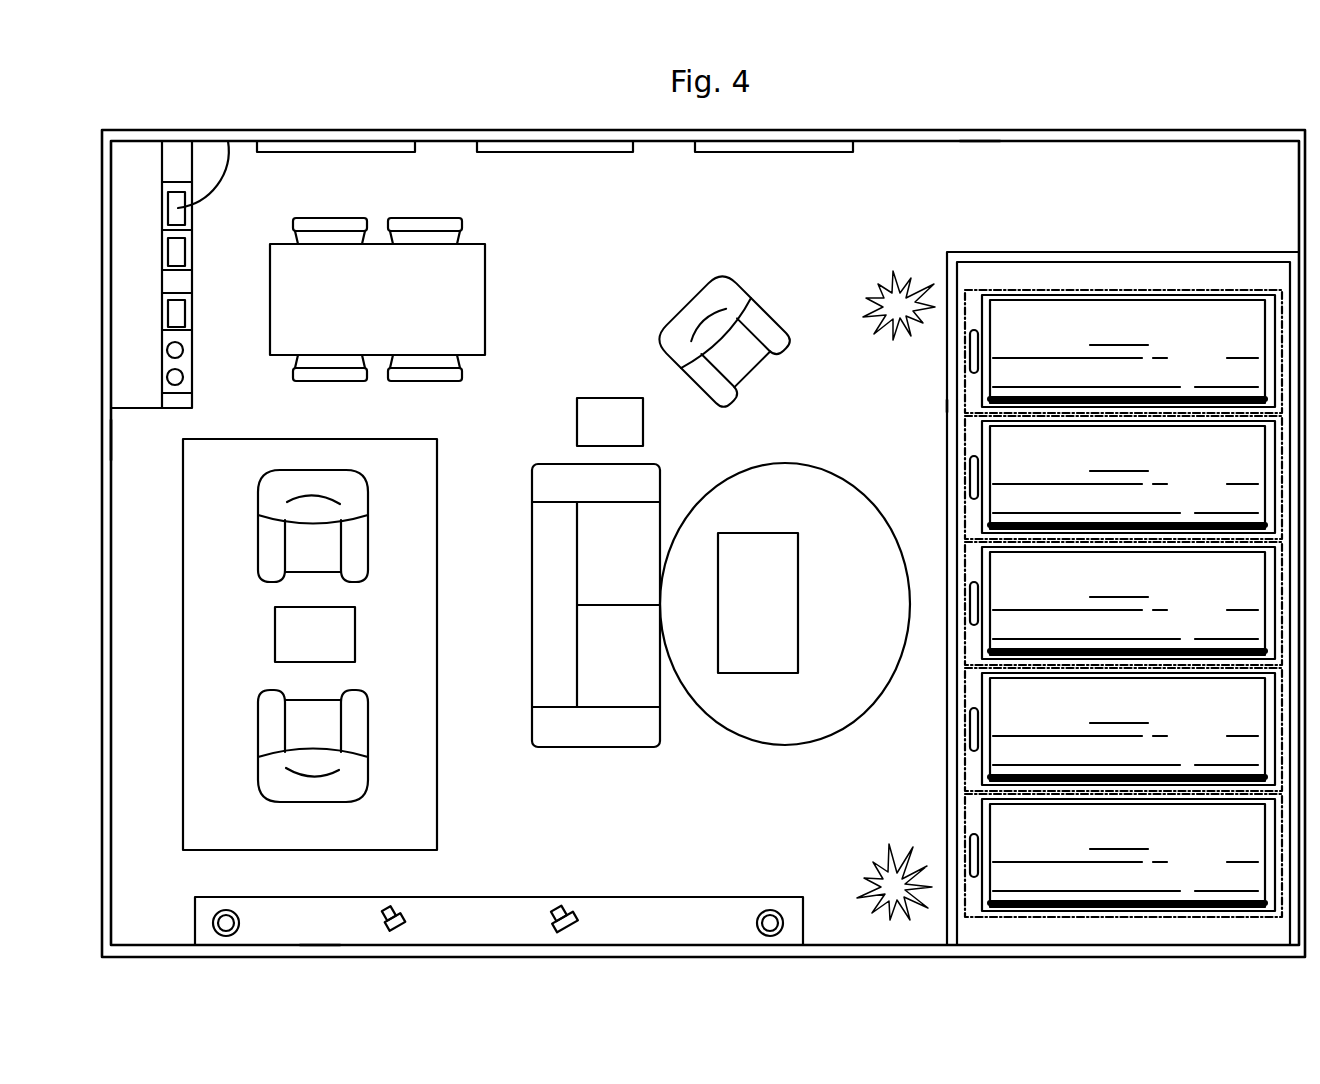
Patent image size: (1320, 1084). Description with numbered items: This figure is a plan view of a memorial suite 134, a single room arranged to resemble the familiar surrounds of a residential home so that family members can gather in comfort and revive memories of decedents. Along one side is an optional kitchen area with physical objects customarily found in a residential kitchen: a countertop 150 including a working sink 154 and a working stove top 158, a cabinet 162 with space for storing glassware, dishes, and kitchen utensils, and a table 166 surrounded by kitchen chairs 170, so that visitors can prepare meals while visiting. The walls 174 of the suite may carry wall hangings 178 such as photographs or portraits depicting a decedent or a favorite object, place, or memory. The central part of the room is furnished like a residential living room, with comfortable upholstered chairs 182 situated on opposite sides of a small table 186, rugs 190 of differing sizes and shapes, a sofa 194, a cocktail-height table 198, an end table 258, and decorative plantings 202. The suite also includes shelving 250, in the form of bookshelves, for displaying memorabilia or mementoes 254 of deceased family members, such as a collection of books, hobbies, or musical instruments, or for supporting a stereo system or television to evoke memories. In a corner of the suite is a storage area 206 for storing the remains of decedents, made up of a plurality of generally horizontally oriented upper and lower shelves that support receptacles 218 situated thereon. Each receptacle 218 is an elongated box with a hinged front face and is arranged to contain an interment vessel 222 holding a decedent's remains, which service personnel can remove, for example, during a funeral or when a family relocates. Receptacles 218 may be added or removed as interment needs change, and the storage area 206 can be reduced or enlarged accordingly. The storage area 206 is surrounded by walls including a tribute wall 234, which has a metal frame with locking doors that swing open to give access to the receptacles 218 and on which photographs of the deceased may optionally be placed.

The memorial suite 134 is at (936, 119).
The countertop 150 is at (178, 295).
The working sink 154 is at (230, 142).
The working stove top 158 is at (178, 363).
The cabinet 162 is at (128, 143).
The table 166 is at (490, 300).
The kitchen chairs 170 is at (478, 222).
The walls 174 is at (115, 528).
The wall hangings 178 is at (405, 152).
The upholstered chairs 182 is at (358, 490).
The small table 186 is at (280, 632).
The rugs 190 is at (425, 612).
The sofa 194 is at (565, 478).
The cocktail-height table 198 is at (762, 545).
The decorative plantings 202 is at (905, 290).
The storage area 206 is at (1200, 275).
The receptacles 218 is at (1270, 335).
The interment vessel 222 is at (1119, 579).
The tribute wall 234 is at (933, 407).
The shelving 250 is at (660, 900).
The mementoes 254 is at (552, 910).
The end table 258 is at (615, 405).